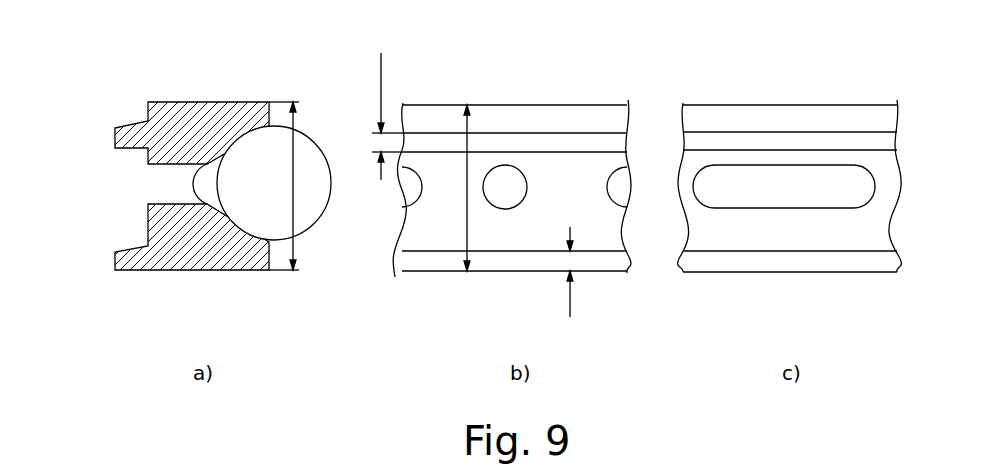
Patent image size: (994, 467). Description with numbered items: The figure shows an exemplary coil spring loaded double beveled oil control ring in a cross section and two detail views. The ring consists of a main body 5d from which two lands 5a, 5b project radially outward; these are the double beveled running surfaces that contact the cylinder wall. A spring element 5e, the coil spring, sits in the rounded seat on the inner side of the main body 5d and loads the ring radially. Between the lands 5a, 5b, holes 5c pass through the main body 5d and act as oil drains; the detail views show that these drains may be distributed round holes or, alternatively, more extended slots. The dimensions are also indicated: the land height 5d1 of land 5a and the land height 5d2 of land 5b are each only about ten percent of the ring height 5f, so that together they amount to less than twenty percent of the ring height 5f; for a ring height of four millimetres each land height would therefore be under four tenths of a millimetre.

The land 5a is at (115, 131).
The land 5b is at (117, 255).
The holes 5c is at (158, 185).
The main body 5d is at (180, 244).
The land height 5d1 is at (377, 116).
The land height 5d2 is at (558, 279).
The spring element 5e is at (305, 222).
The ring height 5f is at (369, 186).